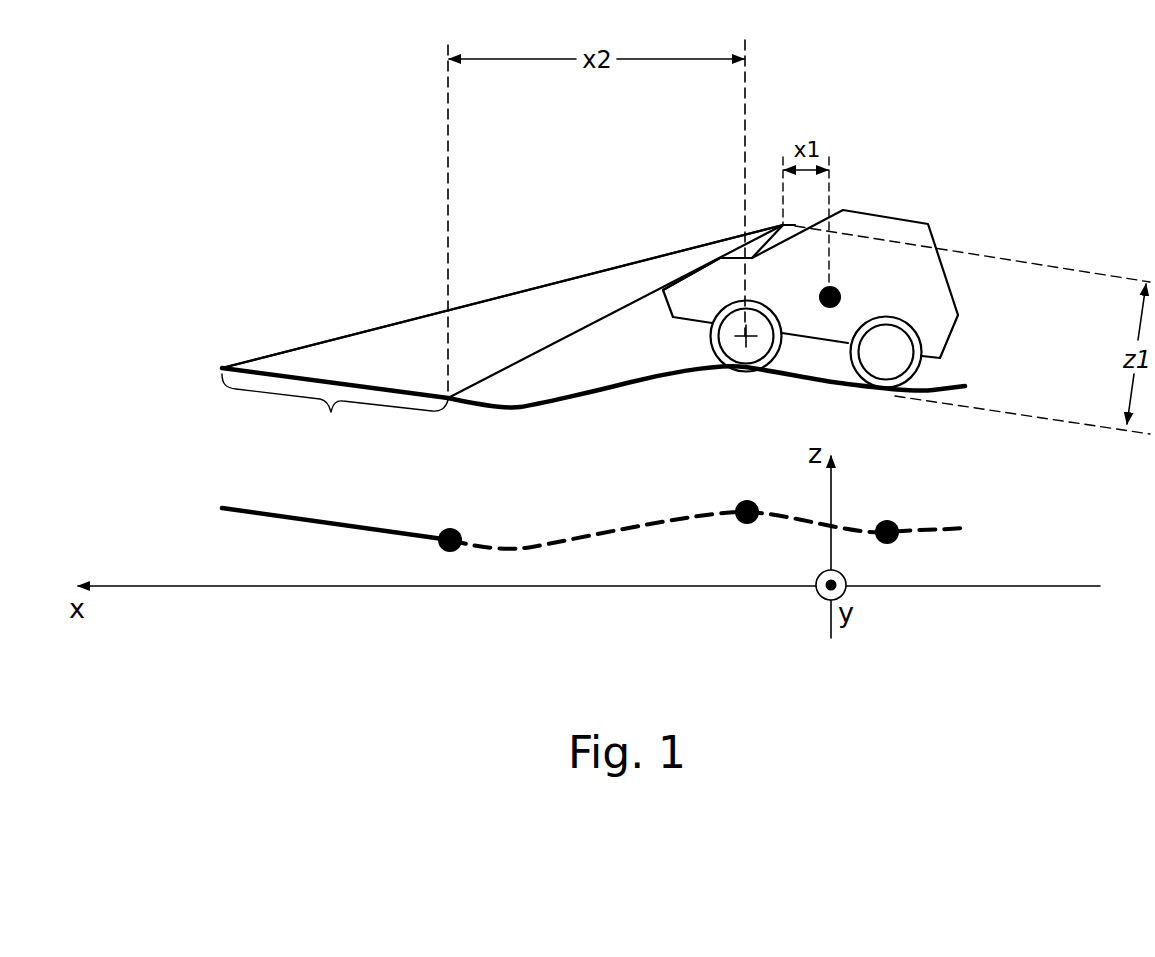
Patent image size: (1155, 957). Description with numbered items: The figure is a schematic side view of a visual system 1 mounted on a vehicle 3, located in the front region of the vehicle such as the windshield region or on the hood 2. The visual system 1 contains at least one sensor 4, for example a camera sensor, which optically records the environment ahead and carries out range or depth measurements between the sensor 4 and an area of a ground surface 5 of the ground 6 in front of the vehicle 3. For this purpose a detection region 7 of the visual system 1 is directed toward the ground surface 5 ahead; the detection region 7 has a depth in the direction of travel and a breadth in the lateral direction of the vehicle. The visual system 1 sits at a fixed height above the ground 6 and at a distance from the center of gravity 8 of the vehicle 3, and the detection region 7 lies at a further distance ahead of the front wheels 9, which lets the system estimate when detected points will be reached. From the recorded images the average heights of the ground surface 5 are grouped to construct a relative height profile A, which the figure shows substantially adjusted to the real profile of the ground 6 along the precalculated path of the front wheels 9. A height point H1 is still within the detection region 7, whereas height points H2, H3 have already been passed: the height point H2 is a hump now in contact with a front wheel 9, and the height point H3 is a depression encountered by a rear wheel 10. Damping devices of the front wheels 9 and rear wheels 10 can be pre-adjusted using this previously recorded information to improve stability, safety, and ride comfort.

The visual system 1 is at (734, 206).
The hood 2 is at (687, 287).
The vehicle 3 is at (893, 210).
The sensor 4 is at (783, 222).
The ground surface 5 is at (335, 413).
The ground 6 is at (574, 410).
The detection region 7 is at (354, 360).
The center of gravity 8 is at (840, 296).
The front wheels 9 is at (728, 342).
The rear wheels 10 is at (882, 352).
The height profile A is at (944, 525).
The height point H1 is at (450, 558).
The height point H2 is at (747, 532).
The height point H3 is at (887, 552).